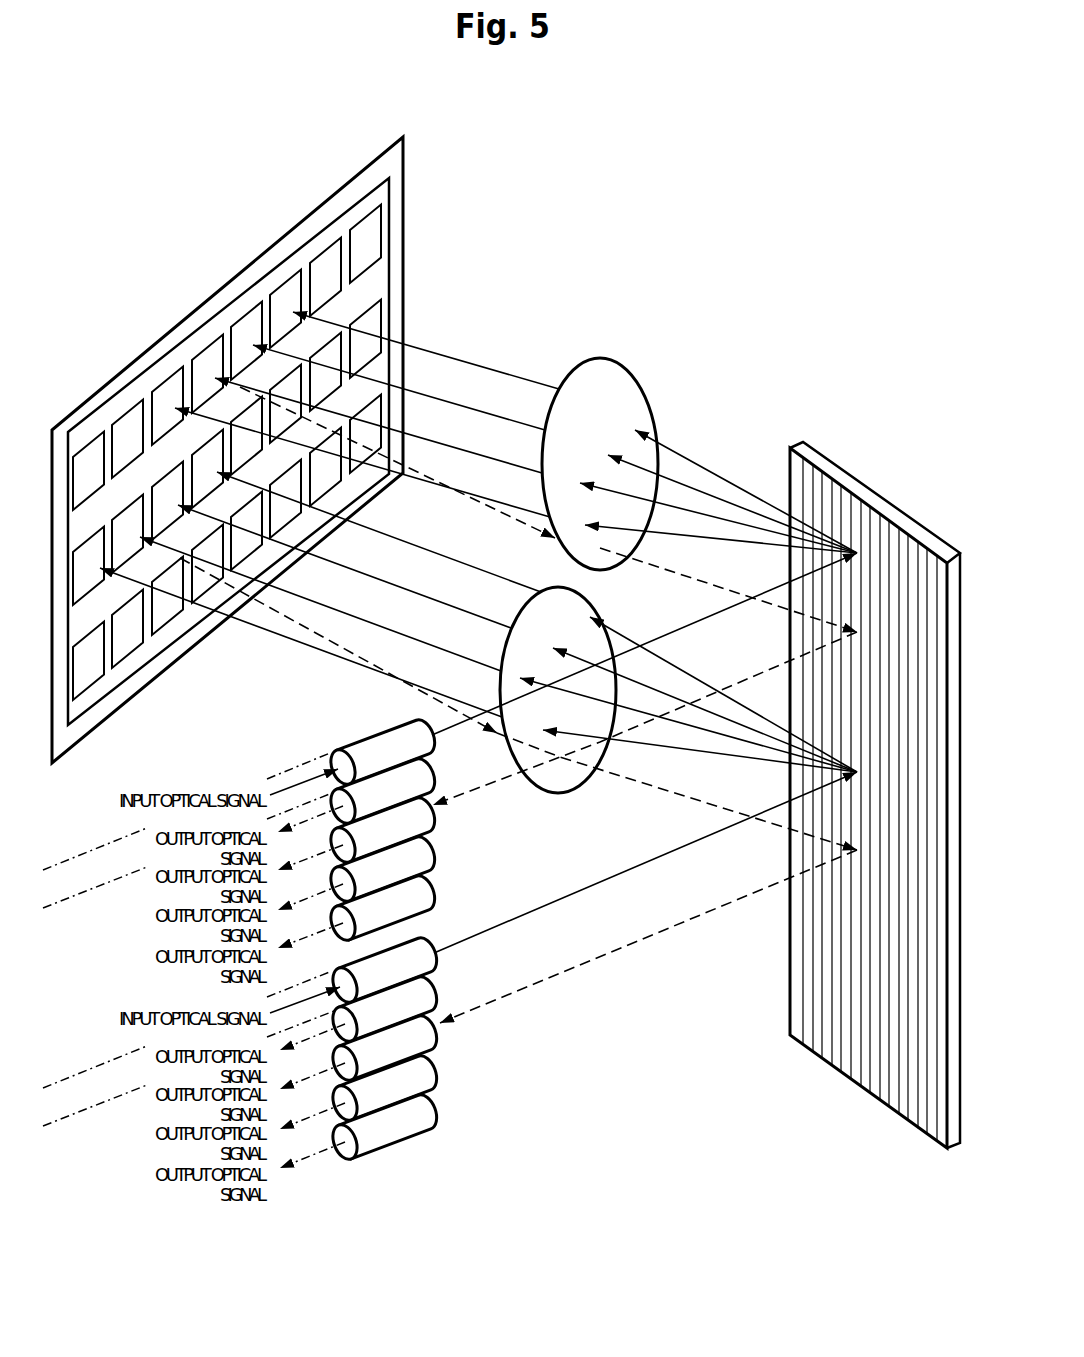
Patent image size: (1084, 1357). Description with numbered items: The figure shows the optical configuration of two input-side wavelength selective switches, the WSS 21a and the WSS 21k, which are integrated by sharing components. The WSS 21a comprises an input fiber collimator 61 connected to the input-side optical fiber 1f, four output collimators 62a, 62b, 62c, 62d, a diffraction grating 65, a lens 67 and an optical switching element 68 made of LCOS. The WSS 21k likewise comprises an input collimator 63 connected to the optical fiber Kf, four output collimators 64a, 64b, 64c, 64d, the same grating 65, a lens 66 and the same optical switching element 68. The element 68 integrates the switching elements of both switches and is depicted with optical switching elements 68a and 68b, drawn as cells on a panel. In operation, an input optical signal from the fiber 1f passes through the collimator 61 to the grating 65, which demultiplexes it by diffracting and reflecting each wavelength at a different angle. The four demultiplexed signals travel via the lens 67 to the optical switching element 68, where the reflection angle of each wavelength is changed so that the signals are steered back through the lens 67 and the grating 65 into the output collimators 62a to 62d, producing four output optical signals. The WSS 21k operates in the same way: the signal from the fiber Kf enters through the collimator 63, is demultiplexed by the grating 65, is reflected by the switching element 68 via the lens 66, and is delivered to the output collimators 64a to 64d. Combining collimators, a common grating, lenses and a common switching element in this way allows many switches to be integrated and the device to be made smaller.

The WSS 21a is at (690, 238).
The WSS 21k is at (710, 175).
The input fiber collimator 61 is at (361, 727).
The output collimator 62a is at (432, 762).
The output collimator 62b is at (432, 823).
The output collimator 62c is at (432, 855).
The output collimator 62d is at (432, 893).
The input collimator 63 is at (434, 950).
The output collimator 64a is at (434, 980).
The output collimator 64b is at (434, 1043).
The output collimator 64c is at (434, 1075).
The output collimator 64d is at (434, 1113).
The grating 65 is at (852, 470).
The lens 66 is at (590, 587).
The lens 67 is at (632, 372).
The optical switching element 68 is at (258, 259).
The optical switching element 68a is at (381, 237).
The optical switching element 68b is at (381, 320).
The optical fiber 1f is at (77, 856).
The optical fiber Kf is at (77, 1074).